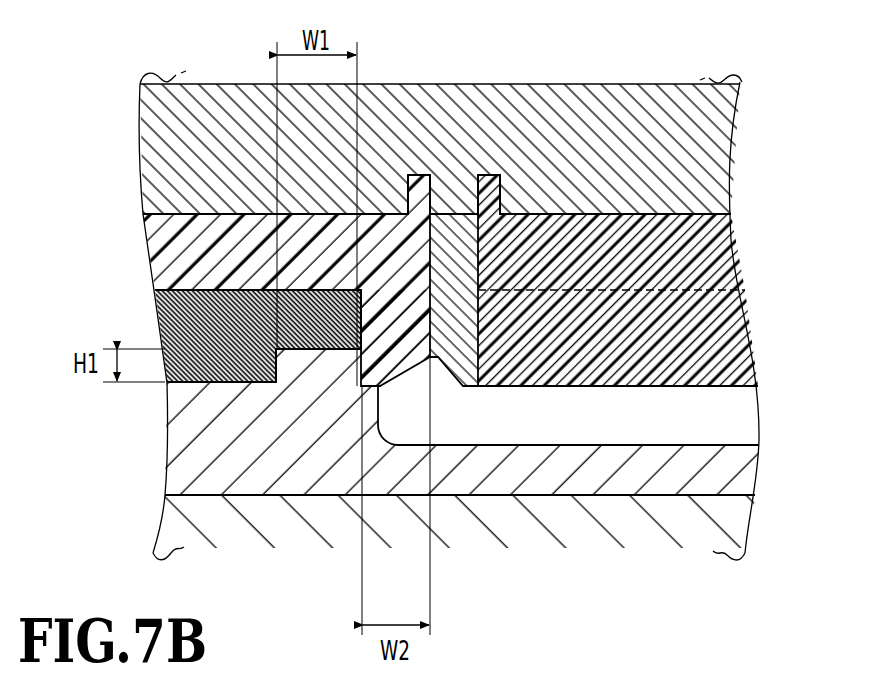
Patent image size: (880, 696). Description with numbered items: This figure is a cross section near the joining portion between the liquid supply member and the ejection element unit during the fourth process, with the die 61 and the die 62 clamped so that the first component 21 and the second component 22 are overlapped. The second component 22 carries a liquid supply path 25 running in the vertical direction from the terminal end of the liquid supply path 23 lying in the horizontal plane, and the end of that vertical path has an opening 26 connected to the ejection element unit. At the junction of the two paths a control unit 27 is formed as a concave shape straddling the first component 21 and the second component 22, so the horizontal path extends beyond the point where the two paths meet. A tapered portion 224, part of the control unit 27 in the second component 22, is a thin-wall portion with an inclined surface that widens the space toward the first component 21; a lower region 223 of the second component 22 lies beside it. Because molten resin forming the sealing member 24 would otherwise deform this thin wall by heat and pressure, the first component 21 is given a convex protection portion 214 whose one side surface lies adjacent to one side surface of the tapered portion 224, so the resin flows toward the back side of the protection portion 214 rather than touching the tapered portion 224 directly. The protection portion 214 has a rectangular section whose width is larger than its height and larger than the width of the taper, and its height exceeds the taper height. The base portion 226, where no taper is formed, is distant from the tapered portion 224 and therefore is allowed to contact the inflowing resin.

The first component 21 is at (466, 512).
The second component 22 is at (400, 201).
The liquid supply path 23 is at (740, 423).
The sealing member 24 is at (173, 335).
The liquid supply path 25 is at (478, 318).
The opening 26 is at (448, 195).
The control unit 27 is at (412, 413).
The die 61 is at (738, 523).
The die 62 is at (708, 152).
The protection portion 214 is at (318, 370).
The lower portion of second layer 223 is at (732, 340).
The tapered portion 224 is at (380, 372).
The base portion 226 is at (385, 315).